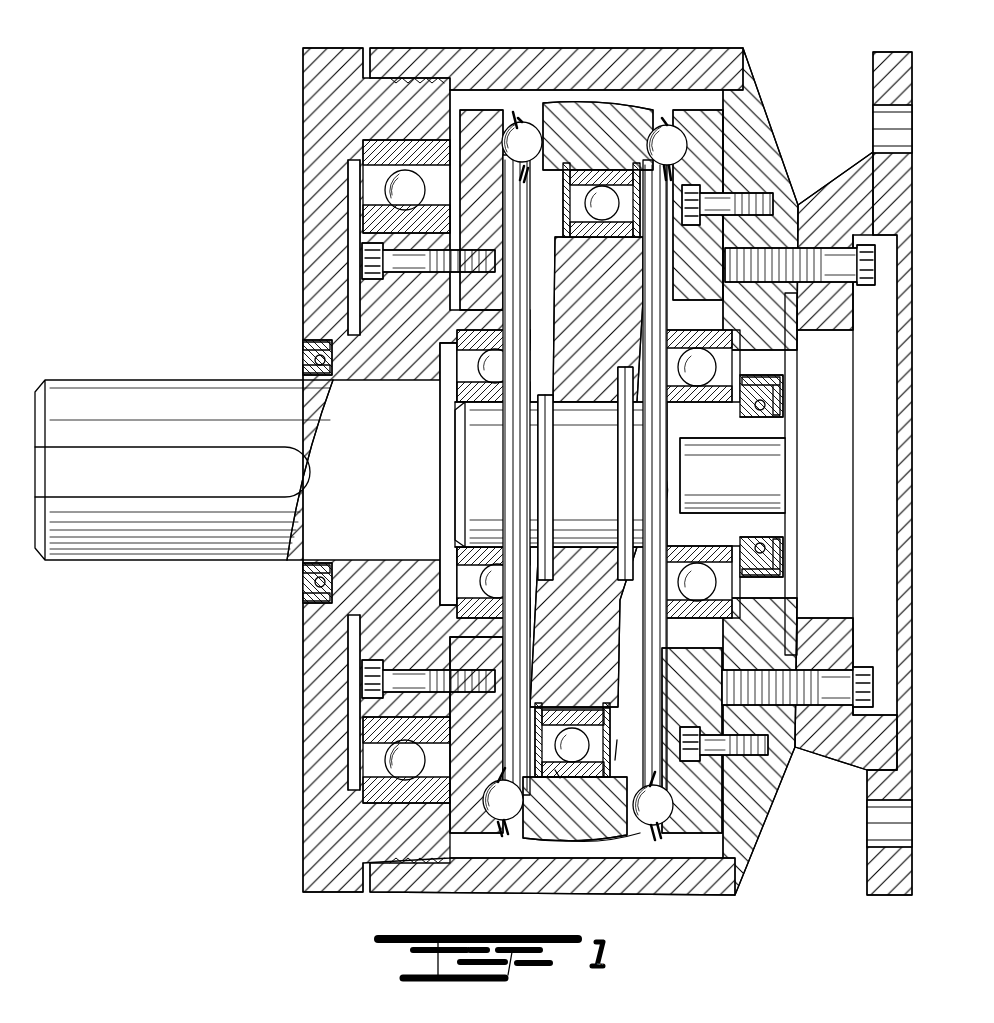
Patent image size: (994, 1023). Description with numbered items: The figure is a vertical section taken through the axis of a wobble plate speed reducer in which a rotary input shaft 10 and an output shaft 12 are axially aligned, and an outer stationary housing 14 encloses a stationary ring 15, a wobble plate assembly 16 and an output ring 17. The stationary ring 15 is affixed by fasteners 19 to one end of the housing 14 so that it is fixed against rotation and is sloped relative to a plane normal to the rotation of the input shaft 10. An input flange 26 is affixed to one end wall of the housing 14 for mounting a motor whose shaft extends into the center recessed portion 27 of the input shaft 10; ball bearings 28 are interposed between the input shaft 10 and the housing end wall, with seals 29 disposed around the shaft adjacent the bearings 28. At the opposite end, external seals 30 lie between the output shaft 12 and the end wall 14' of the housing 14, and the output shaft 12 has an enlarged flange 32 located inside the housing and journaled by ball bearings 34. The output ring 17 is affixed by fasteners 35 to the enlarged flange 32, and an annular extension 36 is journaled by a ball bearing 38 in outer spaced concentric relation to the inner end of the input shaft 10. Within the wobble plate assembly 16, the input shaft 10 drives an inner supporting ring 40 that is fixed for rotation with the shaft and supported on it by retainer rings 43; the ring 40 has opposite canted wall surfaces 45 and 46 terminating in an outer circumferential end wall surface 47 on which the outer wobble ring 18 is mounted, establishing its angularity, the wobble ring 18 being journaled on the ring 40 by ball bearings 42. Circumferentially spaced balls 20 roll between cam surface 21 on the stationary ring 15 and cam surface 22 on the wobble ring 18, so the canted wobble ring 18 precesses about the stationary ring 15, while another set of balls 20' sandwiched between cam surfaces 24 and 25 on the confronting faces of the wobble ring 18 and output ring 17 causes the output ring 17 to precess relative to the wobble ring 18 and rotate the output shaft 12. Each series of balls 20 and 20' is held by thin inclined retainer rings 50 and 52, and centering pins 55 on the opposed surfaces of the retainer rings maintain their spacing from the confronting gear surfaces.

The input shaft 10 is at (762, 480).
The output shaft 12 is at (140, 380).
The housing 14 is at (573, 486).
The end wall 14' is at (385, 470).
The stationary ring 15 is at (722, 810).
The wobble plate assembly 16 is at (623, 758).
The output ring 17 is at (503, 820).
The wobble ring 18 is at (555, 775).
The fasteners 19 is at (750, 195).
The balls 20 is at (706, 839).
The balls 20' is at (593, 405).
The cam surface 21 is at (700, 833).
The cam surface 22 is at (650, 838).
The cam surface 24 is at (562, 103).
The cam surface 25 is at (512, 125).
The input flange 26 is at (813, 208).
The center recessed portion 27 is at (770, 440).
The ball bearings 28 is at (722, 613).
The seals 29 is at (783, 388).
The external seals 30 is at (310, 350).
The enlarged flange 32 is at (365, 320).
The ball bearings 34 is at (372, 213).
The fasteners 35 is at (372, 680).
The annular extension 36 is at (500, 312).
The ball bearing 38 is at (490, 565).
The inner supporting ring 40 is at (672, 635).
The ball bearings 42 is at (573, 777).
The retainer rings 43 is at (553, 547).
The wall surface 45 is at (643, 308).
The wall surface 46 is at (553, 252).
The outer circumferential end wall surface 47 is at (565, 215).
The retainer ring 50 is at (663, 126).
The retainer ring 52 is at (522, 122).
The centering pins 55 is at (668, 170).